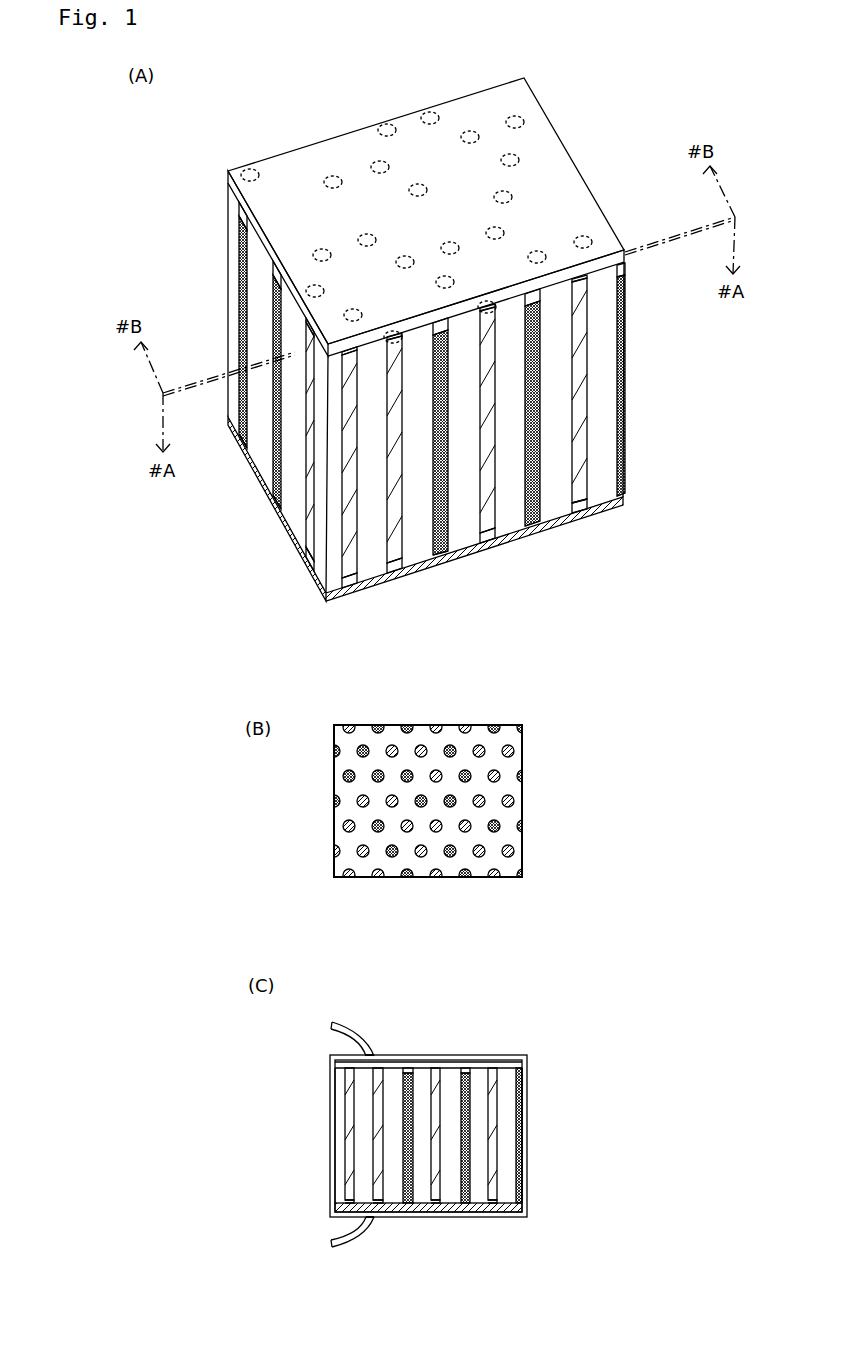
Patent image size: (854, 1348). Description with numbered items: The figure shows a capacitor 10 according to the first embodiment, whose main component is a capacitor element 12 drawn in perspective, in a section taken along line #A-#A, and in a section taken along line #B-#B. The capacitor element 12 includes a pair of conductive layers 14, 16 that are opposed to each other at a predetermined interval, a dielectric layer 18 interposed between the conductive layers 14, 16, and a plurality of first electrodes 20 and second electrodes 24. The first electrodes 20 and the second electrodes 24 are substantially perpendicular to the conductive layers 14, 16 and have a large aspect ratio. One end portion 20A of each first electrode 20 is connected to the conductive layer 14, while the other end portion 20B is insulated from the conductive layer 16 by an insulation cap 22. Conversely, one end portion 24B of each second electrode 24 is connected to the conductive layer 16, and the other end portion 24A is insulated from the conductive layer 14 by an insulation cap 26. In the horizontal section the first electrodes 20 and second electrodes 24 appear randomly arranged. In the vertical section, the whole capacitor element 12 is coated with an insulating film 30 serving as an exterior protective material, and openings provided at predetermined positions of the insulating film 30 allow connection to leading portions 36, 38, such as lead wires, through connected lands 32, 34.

In FIG. 1C, the capacitor 10 is at (553, 1056).
In FIG. 1A, the capacitor element 12 is at (572, 90).
In FIG. 1C, the capacitor element 12 is at (530, 1184).
In FIG. 1A, the conductive layer 14 is at (318, 148).
In FIG. 1C, the conductive layer 14 is at (508, 1062).
In FIG. 1A, the conductive layer 16 is at (318, 584).
In FIG. 1C, the conductive layer 16 is at (505, 1210).
In FIG. 1A, the dielectric layer 18 is at (602, 390).
In FIG. 1B, the dielectric layer 18 is at (506, 835).
In FIG. 1C, the dielectric layer 18 is at (506, 1103).
In FIG. 1A, the first electrode 20 is at (580, 362).
In FIG. 1B, the first electrode 20 is at (511, 750).
In FIG. 1C, the first electrode 20 is at (494, 1125).
In FIG. 1A, the one end portion of first electrode 20A is at (590, 276).
In FIG. 1A, the other end portion of first electrode 20B is at (588, 515).
In FIG. 1A, the insulation cap 22 is at (577, 507).
In FIG. 1C, the insulation cap 22 is at (346, 1200).
In FIG. 1A, the second electrode 24 is at (622, 438).
In FIG. 1B, the second electrode 24 is at (496, 822).
In FIG. 1C, the second electrode 24 is at (520, 1148).
In FIG. 1A, the other end portion of second electrode 24A is at (436, 320).
In FIG. 1A, the one end portion of second electrode 24B is at (624, 500).
In FIG. 1A, the insulation cap 26 is at (440, 332).
In FIG. 1C, the insulation cap 26 is at (409, 1072).
In FIG. 1C, the insulating film 30 is at (450, 1057).
In FIG. 1C, the connected land 32 is at (373, 1058).
In FIG. 1C, the connected land 34 is at (372, 1218).
In FIG. 1C, the leading portion 36 is at (333, 1036).
In FIG. 1C, the leading portion 38 is at (333, 1240).